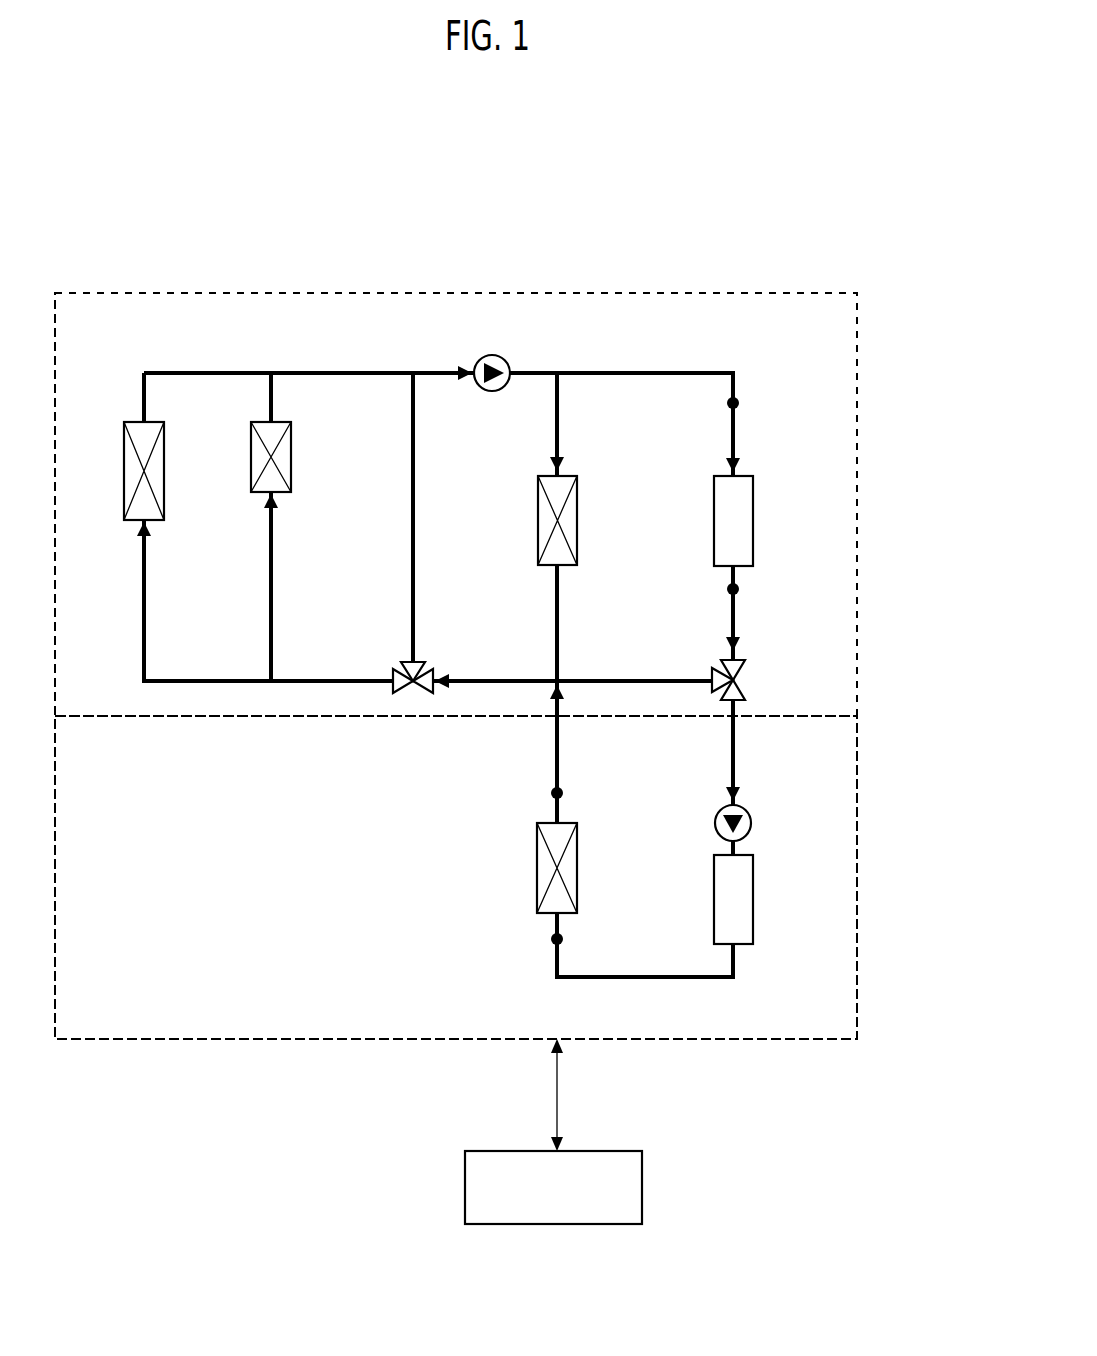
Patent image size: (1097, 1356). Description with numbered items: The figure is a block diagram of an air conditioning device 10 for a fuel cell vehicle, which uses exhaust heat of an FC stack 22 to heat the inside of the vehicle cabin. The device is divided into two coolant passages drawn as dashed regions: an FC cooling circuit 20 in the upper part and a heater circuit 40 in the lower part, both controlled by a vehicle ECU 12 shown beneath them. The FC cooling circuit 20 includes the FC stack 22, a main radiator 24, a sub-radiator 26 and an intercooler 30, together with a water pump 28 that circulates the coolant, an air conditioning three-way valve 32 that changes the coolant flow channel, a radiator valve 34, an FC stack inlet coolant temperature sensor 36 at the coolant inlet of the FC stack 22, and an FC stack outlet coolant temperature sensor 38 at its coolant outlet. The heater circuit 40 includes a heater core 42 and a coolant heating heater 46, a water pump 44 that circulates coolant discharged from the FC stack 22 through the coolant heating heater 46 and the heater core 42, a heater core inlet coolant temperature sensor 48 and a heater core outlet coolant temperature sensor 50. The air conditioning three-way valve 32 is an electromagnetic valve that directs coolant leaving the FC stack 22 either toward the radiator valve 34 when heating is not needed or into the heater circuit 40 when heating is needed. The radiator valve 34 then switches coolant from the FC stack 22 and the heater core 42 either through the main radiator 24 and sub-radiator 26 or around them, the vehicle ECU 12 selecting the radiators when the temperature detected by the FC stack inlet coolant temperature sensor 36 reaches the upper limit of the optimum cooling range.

The air conditioning device 10 is at (785, 277).
The vehicle electronic control unit 12 is at (643, 1186).
The FC cooling circuit 20 is at (862, 432).
The FC stack 22 is at (754, 506).
The main radiator 24 is at (126, 520).
The sub-radiator 26 is at (252, 492).
The water pump 28 is at (510, 365).
The intercooler 30 is at (578, 504).
The air conditioning three-way valve 32 is at (738, 678).
The radiator valve 34 is at (418, 677).
The FC stack inlet coolant temperature sensor 36 is at (740, 400).
The FC stack outlet coolant temperature sensor 38 is at (740, 587).
The heater circuit 40 is at (862, 796).
The heater core 42 is at (536, 871).
The water pump 44 is at (751, 814).
The coolant heating heater 46 is at (754, 895).
The heater core inlet coolant temperature sensor 48 is at (553, 941).
The heater core outlet coolant temperature sensor 50 is at (552, 791).